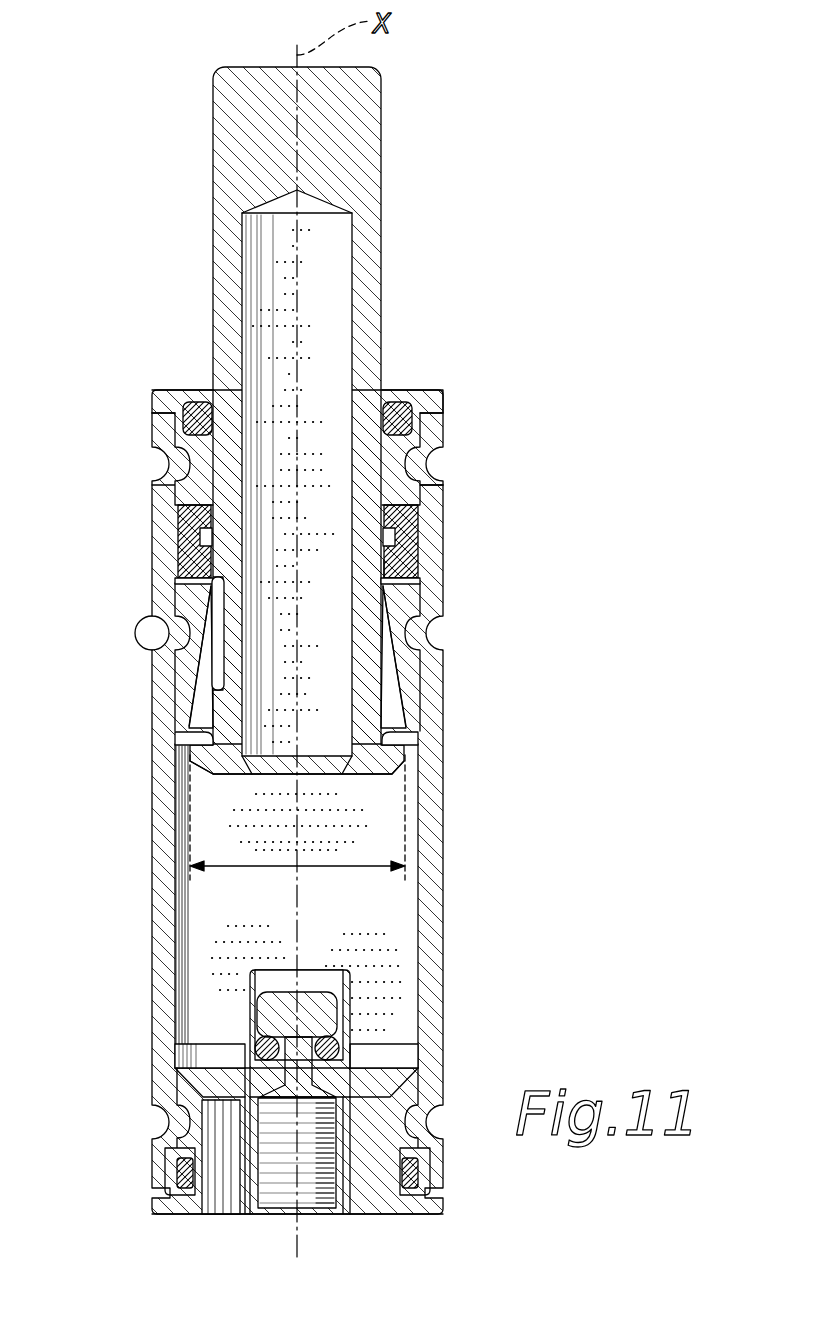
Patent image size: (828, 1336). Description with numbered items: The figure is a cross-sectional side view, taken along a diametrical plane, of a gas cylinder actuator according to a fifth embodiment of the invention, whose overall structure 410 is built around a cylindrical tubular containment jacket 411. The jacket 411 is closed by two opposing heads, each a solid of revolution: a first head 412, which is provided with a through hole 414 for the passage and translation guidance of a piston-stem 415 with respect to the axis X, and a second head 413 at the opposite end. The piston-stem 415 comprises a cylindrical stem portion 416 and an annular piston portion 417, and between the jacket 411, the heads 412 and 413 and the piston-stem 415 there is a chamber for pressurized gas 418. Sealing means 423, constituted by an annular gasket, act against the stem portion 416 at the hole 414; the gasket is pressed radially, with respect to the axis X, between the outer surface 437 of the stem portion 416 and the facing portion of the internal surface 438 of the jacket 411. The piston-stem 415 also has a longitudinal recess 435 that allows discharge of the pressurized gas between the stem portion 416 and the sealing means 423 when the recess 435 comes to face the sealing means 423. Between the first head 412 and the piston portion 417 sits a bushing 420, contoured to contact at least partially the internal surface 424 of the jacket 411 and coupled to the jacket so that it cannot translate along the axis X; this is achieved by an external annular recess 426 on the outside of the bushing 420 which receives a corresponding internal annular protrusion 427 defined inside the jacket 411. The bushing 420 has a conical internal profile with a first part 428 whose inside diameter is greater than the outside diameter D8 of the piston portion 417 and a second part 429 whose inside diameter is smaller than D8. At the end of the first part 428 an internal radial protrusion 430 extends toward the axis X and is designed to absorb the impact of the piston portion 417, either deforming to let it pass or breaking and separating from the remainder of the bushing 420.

The structure 410 is at (590, 152).
The tubular containment jacket 411 is at (433, 835).
The first head 412 is at (440, 391).
The second head 413 is at (391, 1218).
The through hole 414 is at (213, 453).
The piston-stem 415 is at (381, 155).
The stem portion 416 is at (222, 238).
The piston portion 417 is at (213, 773).
The chamber for pressurized gas 418 is at (337, 920).
The bushing 420 is at (412, 672).
The sealing means 423 is at (422, 530).
The internal surface 424 is at (182, 932).
The external annular recess 426 is at (180, 683).
The internal annular protrusion 427 is at (168, 632).
The first part 428 is at (410, 725).
The second part 429 is at (195, 596).
The internal radial protrusion 430 is at (185, 736).
The longitudinal recess 435 is at (218, 582).
The outer surface 437 is at (180, 518).
The internal surface 438 is at (418, 548).
The outside diameter D8 is at (280, 876).